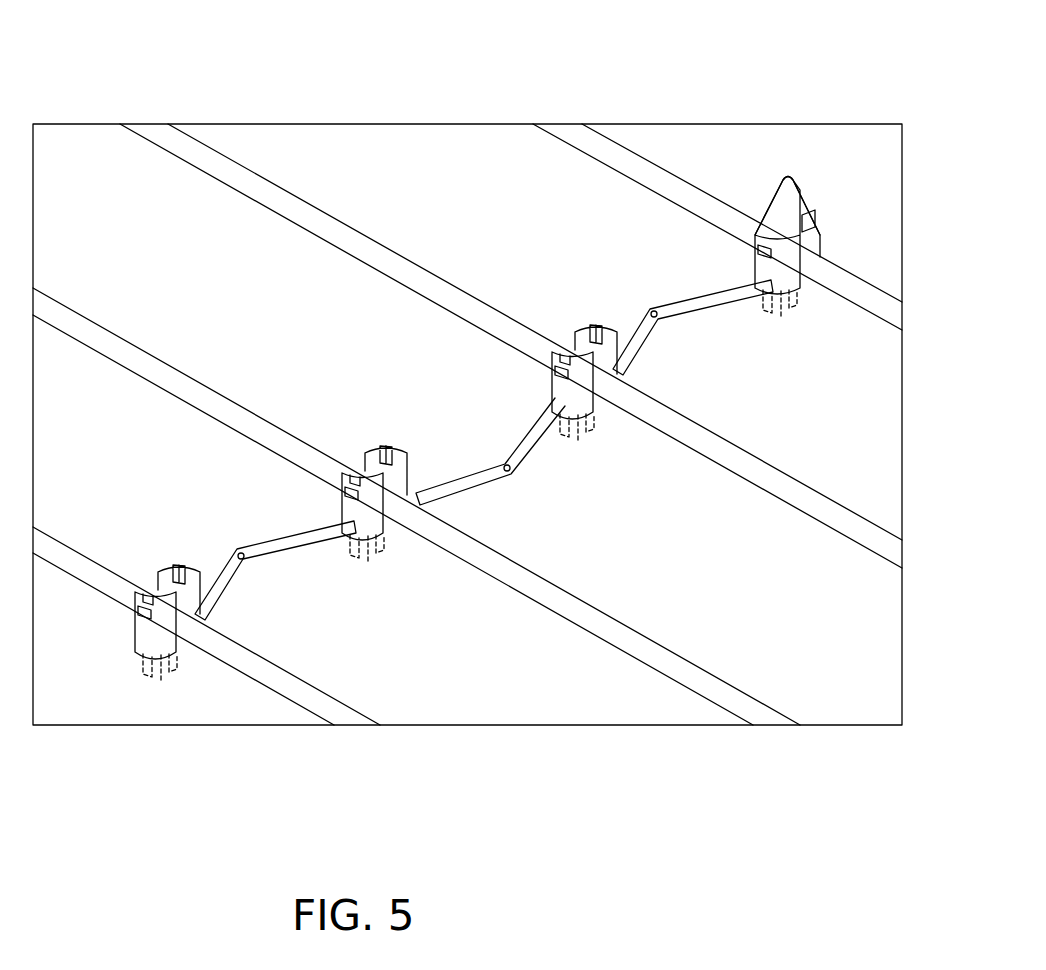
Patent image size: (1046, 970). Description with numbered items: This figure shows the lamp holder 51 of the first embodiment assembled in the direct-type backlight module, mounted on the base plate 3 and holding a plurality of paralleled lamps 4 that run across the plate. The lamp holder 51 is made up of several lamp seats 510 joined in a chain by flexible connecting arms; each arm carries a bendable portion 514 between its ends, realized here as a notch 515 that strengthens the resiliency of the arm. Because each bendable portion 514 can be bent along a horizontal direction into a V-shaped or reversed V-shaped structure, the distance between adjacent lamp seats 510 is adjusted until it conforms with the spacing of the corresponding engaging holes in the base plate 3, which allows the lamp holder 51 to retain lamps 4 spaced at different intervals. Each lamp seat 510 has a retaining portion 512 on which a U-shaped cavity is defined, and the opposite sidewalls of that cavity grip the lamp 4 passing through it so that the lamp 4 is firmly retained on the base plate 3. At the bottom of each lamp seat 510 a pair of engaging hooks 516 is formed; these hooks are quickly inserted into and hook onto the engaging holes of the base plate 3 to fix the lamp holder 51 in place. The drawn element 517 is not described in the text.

The base plate 3 is at (370, 157).
The lamp 4 is at (598, 148).
The lamp holder 51 is at (690, 307).
The lamp seat 510 is at (332, 507).
The retaining portion 512 is at (598, 328).
The bendable portion 514 is at (513, 478).
The notch 515 is at (251, 562).
The engaging hooks 516 is at (603, 423).
The conical head 517 is at (777, 208).